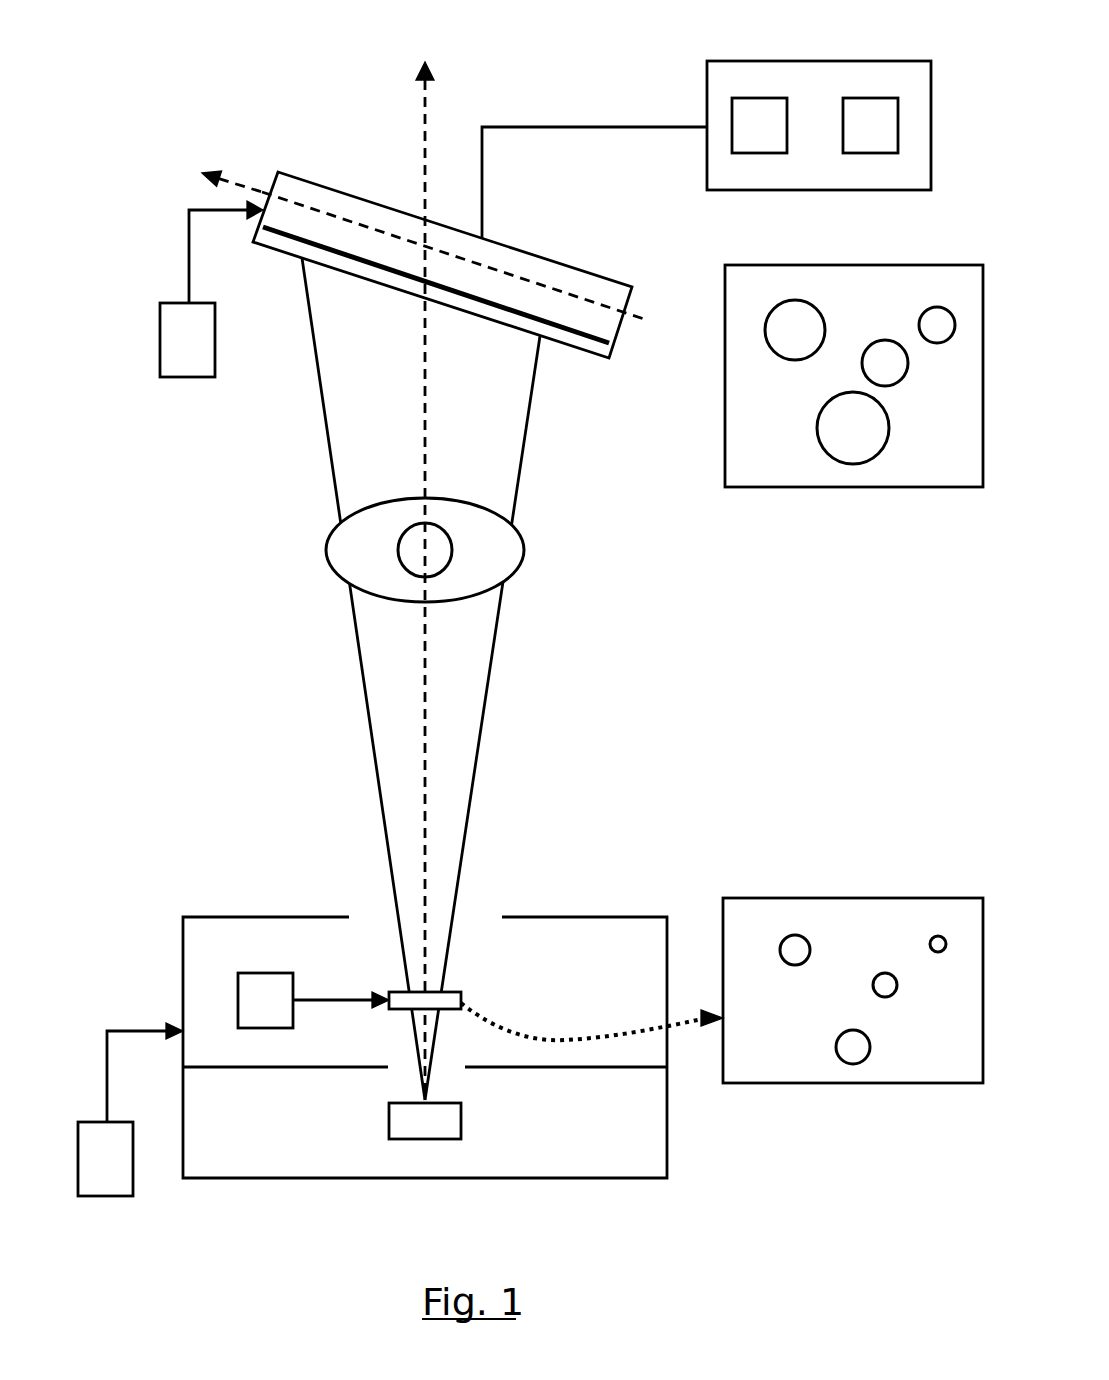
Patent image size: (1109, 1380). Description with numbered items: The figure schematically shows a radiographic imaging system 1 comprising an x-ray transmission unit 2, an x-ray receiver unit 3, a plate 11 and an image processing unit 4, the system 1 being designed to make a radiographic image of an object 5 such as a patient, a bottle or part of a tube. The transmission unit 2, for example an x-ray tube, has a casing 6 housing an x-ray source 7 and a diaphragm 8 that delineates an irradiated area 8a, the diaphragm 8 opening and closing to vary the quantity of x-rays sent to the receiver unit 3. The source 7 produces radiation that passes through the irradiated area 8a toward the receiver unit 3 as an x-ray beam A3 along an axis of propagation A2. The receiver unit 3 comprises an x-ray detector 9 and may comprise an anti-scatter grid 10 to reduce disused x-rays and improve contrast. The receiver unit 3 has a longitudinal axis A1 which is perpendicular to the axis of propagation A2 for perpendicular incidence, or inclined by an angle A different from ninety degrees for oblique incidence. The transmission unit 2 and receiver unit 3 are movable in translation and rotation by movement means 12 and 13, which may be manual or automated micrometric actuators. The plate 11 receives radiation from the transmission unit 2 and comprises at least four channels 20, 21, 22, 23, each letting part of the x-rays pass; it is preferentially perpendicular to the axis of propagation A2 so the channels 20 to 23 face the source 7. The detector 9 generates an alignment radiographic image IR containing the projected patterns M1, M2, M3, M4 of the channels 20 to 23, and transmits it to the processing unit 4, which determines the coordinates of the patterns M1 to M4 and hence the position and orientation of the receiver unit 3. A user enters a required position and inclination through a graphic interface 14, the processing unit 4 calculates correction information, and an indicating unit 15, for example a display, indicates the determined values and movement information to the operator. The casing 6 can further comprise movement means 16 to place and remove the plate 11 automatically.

The radiographic imaging system 1 is at (701, 666).
The x-ray transmission unit 2 is at (591, 888).
The x-ray receiver unit 3 is at (324, 156).
The image processing unit 4 is at (780, 61).
The object 5 is at (370, 555).
The casing 6 is at (288, 915).
The x-ray source 7 is at (428, 1127).
The diaphragm 8 is at (567, 1067).
The irradiated area 8a is at (396, 1078).
The x-ray detector 9 is at (568, 277).
The anti-scatter grid 10 is at (585, 345).
The plate 11 is at (445, 997).
The movement means 12 is at (112, 1180).
The movement means 13 is at (188, 358).
The graphic interface 14 is at (770, 112).
The indicating unit 15 is at (875, 103).
The movement means 16 is at (255, 1003).
The channel 20 is at (938, 936).
The channel 21 is at (895, 992).
The channel 22 is at (853, 1063).
The channel 23 is at (790, 937).
The angle A is at (413, 243).
The longitudinal axis A1 is at (247, 185).
The axis of propagation A2 is at (423, 168).
The x-ray beam A3 is at (462, 702).
The alignment radiographic image IR is at (775, 487).
The projected pattern M1 is at (935, 308).
The projected pattern M2 is at (895, 375).
The projected pattern M3 is at (847, 450).
The projected pattern M4 is at (790, 308).